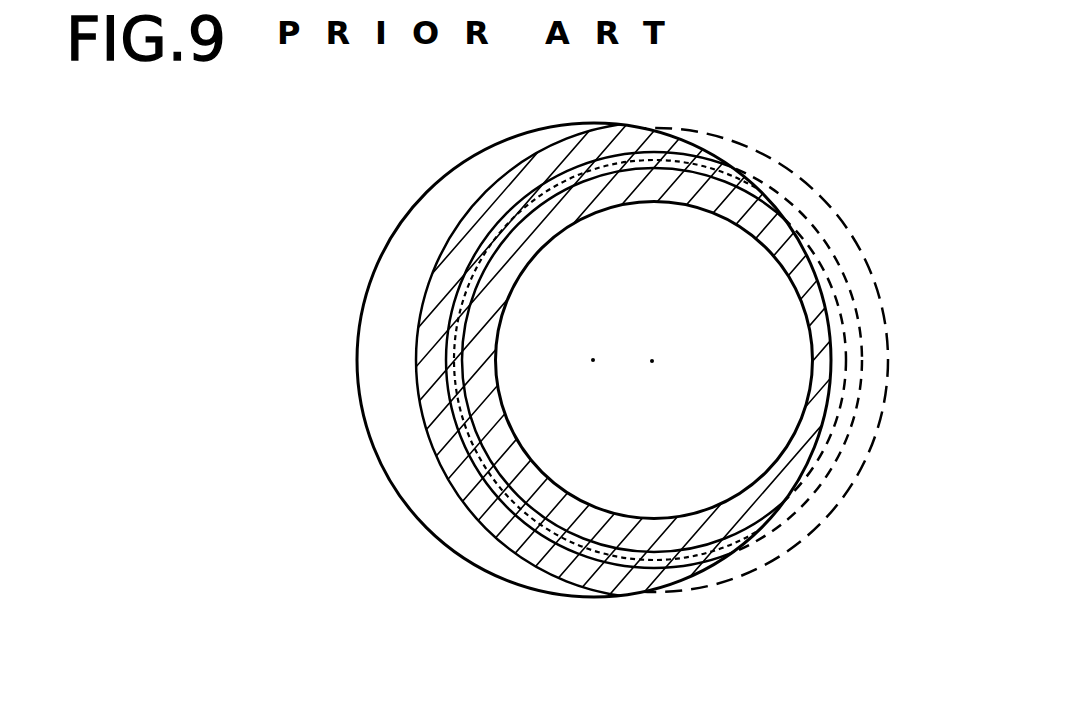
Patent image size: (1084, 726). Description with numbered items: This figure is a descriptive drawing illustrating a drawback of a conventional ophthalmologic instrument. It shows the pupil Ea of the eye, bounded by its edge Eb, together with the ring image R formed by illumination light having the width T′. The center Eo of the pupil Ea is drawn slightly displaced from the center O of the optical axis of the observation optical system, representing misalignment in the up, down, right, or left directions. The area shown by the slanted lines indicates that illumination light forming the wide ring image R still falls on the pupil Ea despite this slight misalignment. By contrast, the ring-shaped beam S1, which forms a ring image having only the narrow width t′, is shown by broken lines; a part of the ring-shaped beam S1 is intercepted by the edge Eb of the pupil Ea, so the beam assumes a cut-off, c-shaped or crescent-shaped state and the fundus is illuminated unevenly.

The width of ring image T′ is at (412, 110).
The ring image R is at (615, 133).
The center of pupil Eo is at (593, 360).
The center of optical axis of observation optical system O is at (652, 361).
The edge of pupil Eb is at (362, 398).
The pupil Ea is at (490, 550).
The ring-shaped beam S1 is at (600, 593).
The width of ring image formed by ring-shaped beam t′ is at (642, 553).